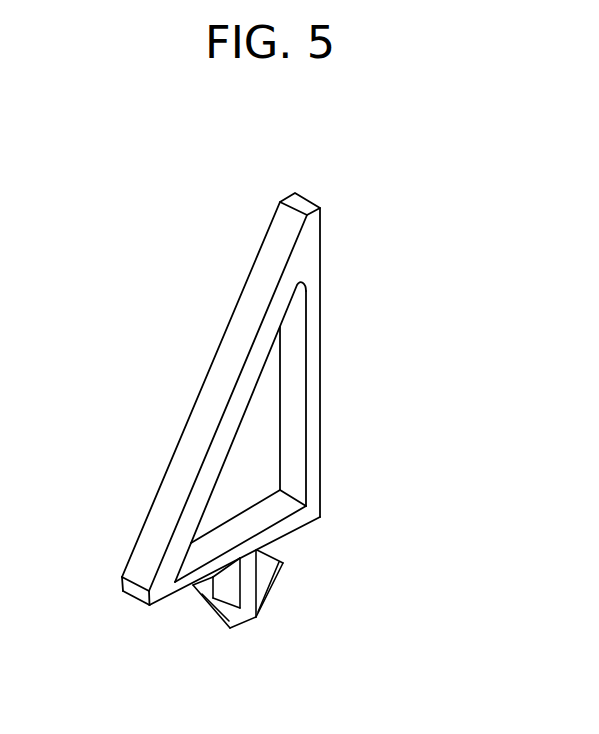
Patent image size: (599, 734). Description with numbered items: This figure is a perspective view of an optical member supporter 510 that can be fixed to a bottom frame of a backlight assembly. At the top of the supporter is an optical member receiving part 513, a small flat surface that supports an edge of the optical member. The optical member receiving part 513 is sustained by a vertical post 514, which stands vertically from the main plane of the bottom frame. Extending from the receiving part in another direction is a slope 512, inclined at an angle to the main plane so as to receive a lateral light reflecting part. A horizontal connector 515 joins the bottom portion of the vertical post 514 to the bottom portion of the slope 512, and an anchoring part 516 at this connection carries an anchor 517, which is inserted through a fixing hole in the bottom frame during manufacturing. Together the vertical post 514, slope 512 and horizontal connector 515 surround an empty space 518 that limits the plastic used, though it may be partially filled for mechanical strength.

The optical member supporter 510 is at (300, 137).
The slope 512 is at (194, 435).
The optical member receiving part 513 is at (305, 204).
The vertical post 514 is at (316, 462).
The horizontal connector 515 is at (297, 520).
The anchoring part 516 is at (251, 578).
The anchor 517 is at (245, 615).
The empty space 518 is at (268, 415).